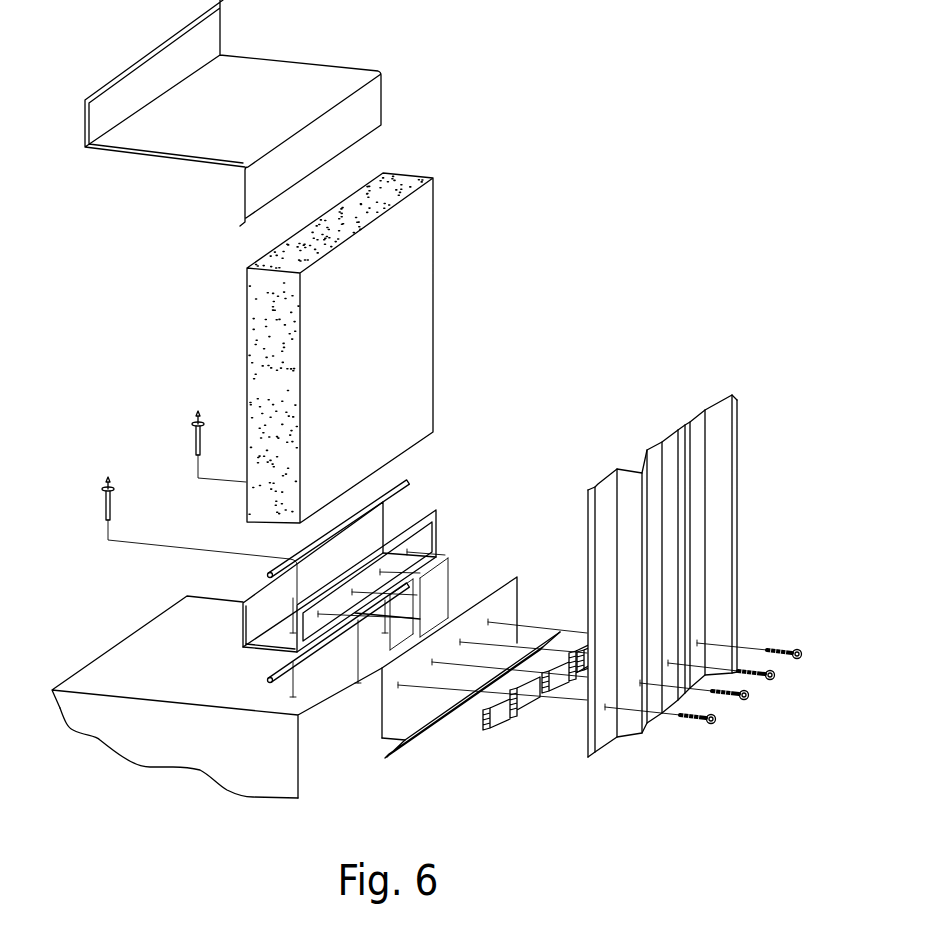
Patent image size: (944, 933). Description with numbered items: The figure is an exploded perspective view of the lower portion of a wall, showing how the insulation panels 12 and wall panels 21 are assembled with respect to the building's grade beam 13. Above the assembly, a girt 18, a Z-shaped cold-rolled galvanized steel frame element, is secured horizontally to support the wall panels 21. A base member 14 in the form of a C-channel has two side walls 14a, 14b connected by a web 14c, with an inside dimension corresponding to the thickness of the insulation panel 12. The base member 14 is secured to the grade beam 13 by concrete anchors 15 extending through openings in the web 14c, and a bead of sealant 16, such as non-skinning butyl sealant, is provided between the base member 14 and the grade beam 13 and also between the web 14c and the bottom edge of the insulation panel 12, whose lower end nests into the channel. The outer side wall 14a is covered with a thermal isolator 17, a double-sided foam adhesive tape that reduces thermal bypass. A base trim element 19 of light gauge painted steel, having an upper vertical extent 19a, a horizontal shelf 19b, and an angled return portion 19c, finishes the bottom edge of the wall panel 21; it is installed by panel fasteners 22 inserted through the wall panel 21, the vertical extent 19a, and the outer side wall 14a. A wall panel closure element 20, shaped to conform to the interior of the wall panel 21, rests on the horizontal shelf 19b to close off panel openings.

The insulation panel 12 is at (464, 289).
The grade beam 13 is at (303, 789).
The base member 14 is at (342, 581).
The outer side wall 14a is at (437, 537).
The side wall 14b is at (242, 624).
The web 14c is at (268, 652).
The concrete anchor 15 is at (197, 410).
The sealant 16 is at (409, 482).
The thermal isolator 17 is at (430, 547).
The girt 18 is at (407, 94).
The base trim element 19 is at (469, 674).
The upper vertical extent 19a is at (517, 577).
The horizontal shelf 19b is at (384, 758).
The angled return portion 19c is at (394, 757).
The wall panel closure element 20 is at (496, 726).
The wall panel 21 is at (762, 412).
The panel fastener 22 is at (803, 647).